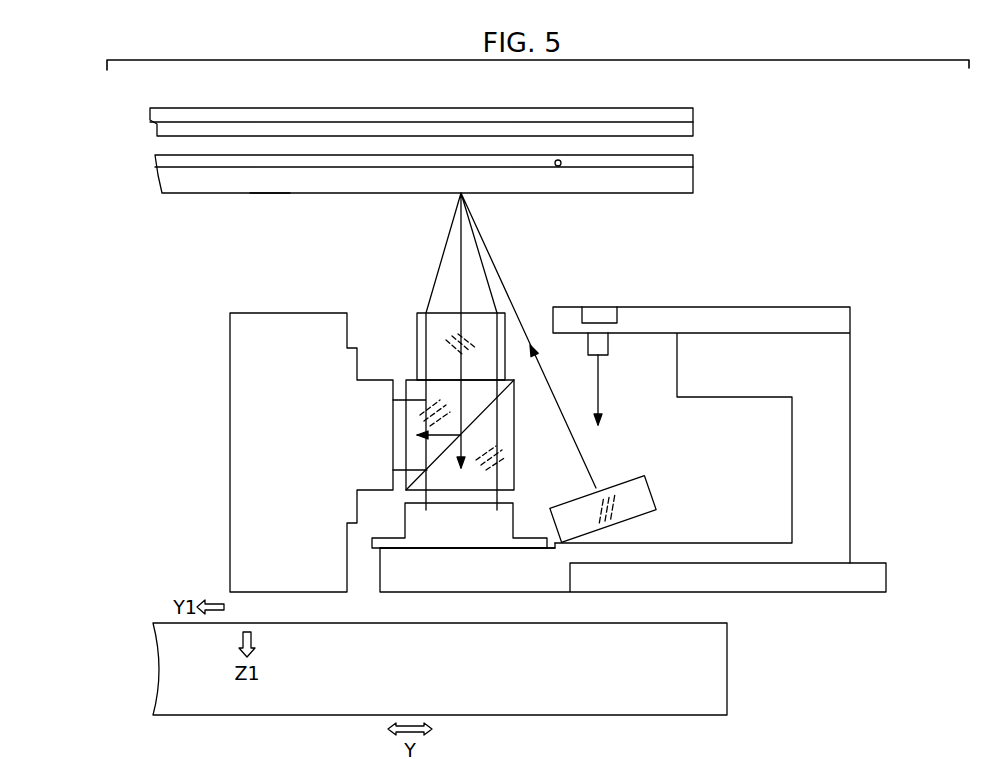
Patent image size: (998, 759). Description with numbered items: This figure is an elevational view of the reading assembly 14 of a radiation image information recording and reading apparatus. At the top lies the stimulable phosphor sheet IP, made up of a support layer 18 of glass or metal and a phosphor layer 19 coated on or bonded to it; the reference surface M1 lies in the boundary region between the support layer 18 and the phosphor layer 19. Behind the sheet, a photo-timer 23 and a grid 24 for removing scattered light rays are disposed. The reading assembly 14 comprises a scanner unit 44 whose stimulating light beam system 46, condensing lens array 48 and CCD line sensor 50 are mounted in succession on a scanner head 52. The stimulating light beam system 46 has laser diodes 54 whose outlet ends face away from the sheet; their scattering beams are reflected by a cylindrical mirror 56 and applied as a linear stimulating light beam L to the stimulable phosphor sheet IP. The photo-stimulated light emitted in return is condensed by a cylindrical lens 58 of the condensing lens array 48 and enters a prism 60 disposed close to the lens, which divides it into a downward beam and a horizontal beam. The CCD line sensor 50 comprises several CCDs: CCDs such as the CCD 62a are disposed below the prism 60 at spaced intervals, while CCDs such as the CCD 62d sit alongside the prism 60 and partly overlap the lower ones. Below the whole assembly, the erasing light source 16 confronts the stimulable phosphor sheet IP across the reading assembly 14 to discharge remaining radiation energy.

The reading assembly 14 is at (939, 206).
The erasing light source 16 is at (745, 655).
The support layer 18 is at (337, 186).
The phosphor layer 19 is at (400, 165).
The photo-timer 23 is at (318, 110).
The grid 24 is at (388, 125).
The stimulable phosphor sheet IP is at (268, 200).
The reference surface M1 is at (559, 168).
The stimulating light beam L is at (503, 282).
The scanner unit 44 is at (770, 275).
The stimulating light beam system 46 is at (616, 279).
The condensing lens array 48 is at (521, 507).
The CCD line sensor 50 is at (399, 510).
The scanner head 52 is at (833, 380).
The laser diode 54 is at (607, 350).
The cylindrical mirror 56 is at (656, 494).
The cylindrical lens 58 is at (423, 333).
The prism 60 is at (445, 483).
The CCD 62a is at (508, 548).
The CCD 62d is at (365, 443).